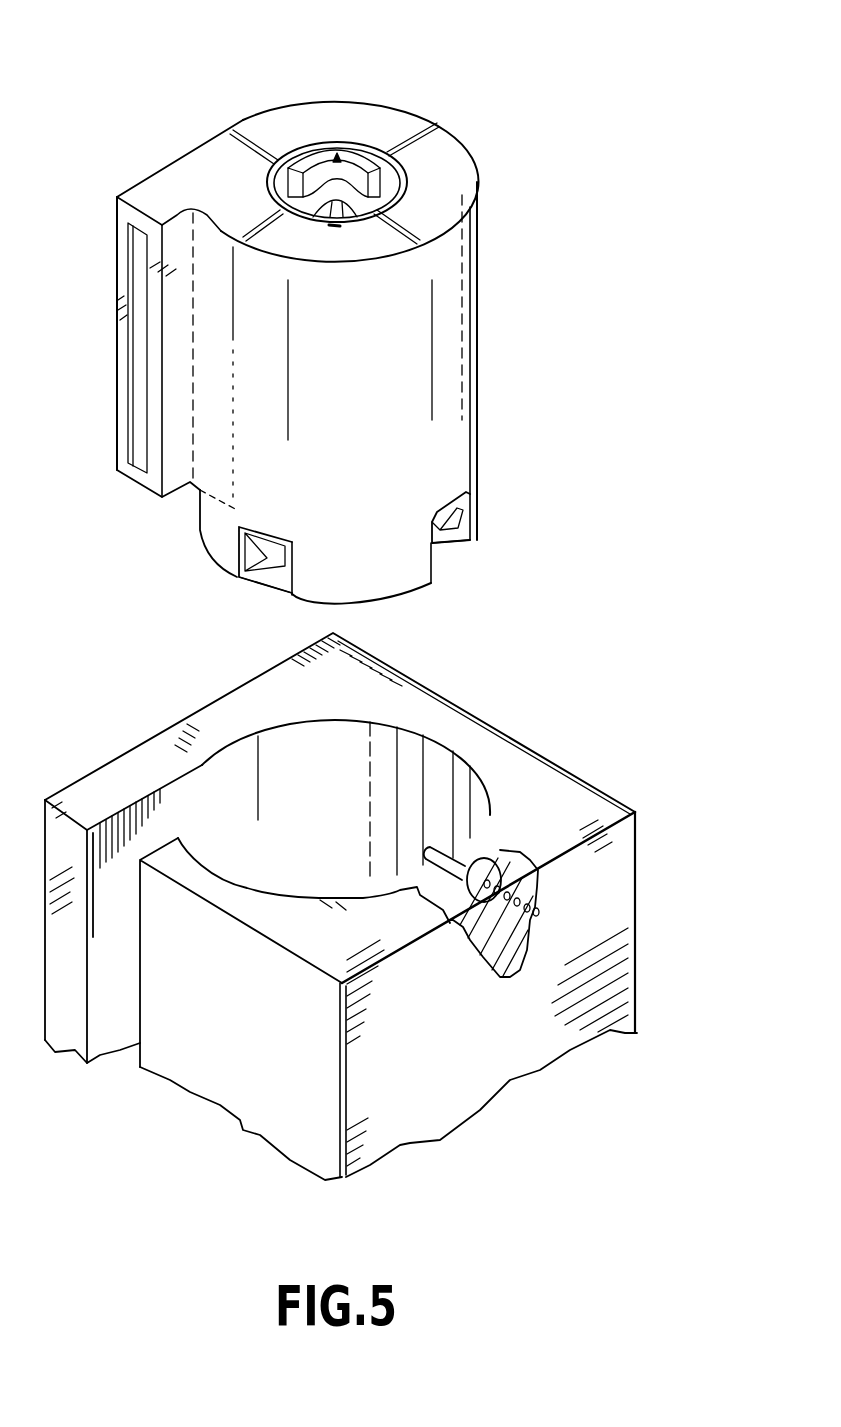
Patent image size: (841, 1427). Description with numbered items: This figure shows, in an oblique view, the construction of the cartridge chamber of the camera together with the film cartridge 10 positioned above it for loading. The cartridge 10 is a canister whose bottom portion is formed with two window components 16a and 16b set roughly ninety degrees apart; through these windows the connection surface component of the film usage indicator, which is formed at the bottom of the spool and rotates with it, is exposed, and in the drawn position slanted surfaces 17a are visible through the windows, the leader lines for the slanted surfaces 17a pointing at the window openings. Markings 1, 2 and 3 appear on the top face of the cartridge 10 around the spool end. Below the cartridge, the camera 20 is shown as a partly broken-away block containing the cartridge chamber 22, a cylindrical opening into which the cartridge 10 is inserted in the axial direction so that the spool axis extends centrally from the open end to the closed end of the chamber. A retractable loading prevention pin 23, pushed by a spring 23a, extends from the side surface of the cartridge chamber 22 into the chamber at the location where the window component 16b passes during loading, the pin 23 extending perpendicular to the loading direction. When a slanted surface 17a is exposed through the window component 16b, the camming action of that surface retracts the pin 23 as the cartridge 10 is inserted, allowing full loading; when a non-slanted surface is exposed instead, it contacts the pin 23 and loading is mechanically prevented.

The film cartridge 10 is at (429, 98).
The combination position marking 1 is at (334, 135).
The combination position marking 2 is at (403, 210).
The combination position marking 3 is at (292, 235).
The window component 16a is at (279, 536).
The window component 16b is at (451, 507).
The slanted surfaces 17a is at (263, 563).
The camera 20 is at (487, 683).
The cartridge chamber 22 is at (413, 770).
The loading prevention pin 23 is at (430, 848).
The spring 23a is at (540, 900).